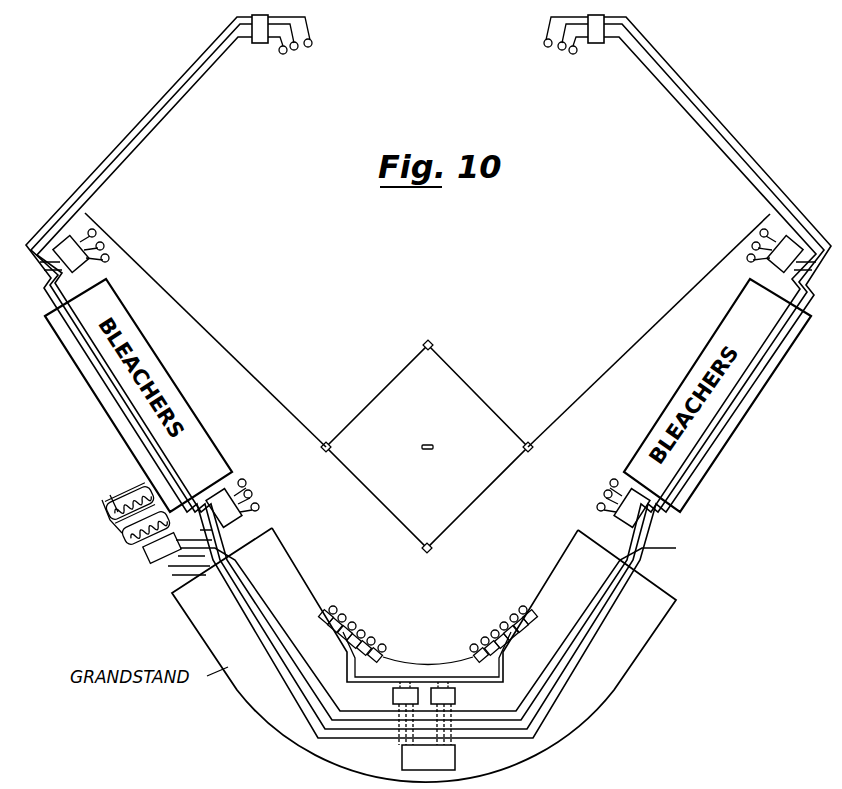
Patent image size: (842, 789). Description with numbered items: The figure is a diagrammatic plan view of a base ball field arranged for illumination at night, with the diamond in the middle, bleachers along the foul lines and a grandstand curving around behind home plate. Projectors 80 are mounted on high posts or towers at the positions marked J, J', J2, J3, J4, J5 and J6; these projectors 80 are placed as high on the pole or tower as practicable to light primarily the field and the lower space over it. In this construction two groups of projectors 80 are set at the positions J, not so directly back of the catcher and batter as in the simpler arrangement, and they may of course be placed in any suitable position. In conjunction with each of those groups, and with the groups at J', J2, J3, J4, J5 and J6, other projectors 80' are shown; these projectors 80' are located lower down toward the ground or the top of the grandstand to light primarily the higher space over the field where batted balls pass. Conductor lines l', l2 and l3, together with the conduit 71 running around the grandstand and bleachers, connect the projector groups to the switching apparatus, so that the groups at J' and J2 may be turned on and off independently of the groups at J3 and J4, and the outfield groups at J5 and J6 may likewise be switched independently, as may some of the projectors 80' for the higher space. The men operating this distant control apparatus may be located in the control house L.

The conduit / cable run along grandstand 71 is at (156, 127).
The projector 80 is at (428, 345).
The projector 80' is at (428, 347).
The projector position J is at (425, 646).
The projector position J' is at (599, 507).
The projector position J2 is at (250, 507).
The projector position J3 is at (764, 248).
The projector position J4 is at (92, 245).
The projector position J5 is at (573, 54).
The projector position J6 is at (289, 50).
The conductor line l' is at (428, 659).
The conductor line l2 is at (427, 394).
The conductor line l3 is at (428, 391).
The control house L is at (455, 758).